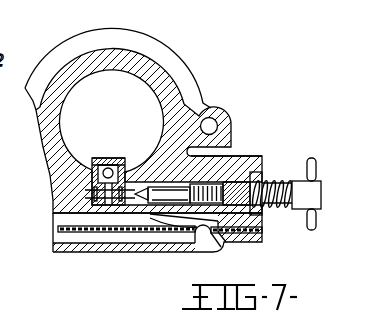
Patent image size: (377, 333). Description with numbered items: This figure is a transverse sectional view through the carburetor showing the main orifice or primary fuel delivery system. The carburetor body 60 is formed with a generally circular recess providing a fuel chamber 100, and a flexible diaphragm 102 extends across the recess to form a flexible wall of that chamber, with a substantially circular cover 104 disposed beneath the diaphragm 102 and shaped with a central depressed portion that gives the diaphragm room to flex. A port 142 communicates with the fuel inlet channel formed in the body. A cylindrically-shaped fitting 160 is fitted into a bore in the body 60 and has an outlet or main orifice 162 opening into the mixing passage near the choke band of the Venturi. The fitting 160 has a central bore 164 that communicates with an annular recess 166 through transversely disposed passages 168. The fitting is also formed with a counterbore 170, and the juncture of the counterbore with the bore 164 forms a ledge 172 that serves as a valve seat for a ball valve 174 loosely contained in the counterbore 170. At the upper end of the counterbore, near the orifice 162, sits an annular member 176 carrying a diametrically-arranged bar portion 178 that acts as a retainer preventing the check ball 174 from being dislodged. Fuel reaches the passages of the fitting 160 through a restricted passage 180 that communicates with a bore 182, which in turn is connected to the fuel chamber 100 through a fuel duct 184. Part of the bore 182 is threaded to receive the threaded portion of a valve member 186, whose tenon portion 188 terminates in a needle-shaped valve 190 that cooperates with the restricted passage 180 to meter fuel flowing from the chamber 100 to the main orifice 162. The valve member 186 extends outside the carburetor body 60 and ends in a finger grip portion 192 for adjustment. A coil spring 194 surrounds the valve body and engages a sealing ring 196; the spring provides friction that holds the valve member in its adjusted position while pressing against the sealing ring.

The carburetor body 60 is at (150, 48).
The fuel chamber 100 is at (64, 224).
The diaphragm 102 is at (216, 250).
The cover 104 is at (258, 218).
The port 142 is at (316, 166).
The fitting 160 is at (62, 247).
The main orifice 162 is at (106, 157).
The central bore 164 is at (112, 203).
The annular recess 166 is at (55, 213).
The transverse passages 168 is at (103, 203).
The counterbore 170 is at (123, 175).
The ledge 172 is at (92, 193).
The ball valve 174 is at (95, 170).
The annular member 176 is at (106, 166).
The bar portion 178 is at (119, 160).
The restricted passage 180 is at (135, 203).
The bore 182 is at (186, 228).
The fuel duct 184 is at (156, 233).
The valve member 186 is at (242, 165).
The tenon portion 188 is at (134, 232).
The needle-shaped valve 190 is at (138, 205).
The finger grip portion 192 is at (330, 194).
The coil spring 194 is at (283, 208).
The sealing ring 196 is at (226, 230).